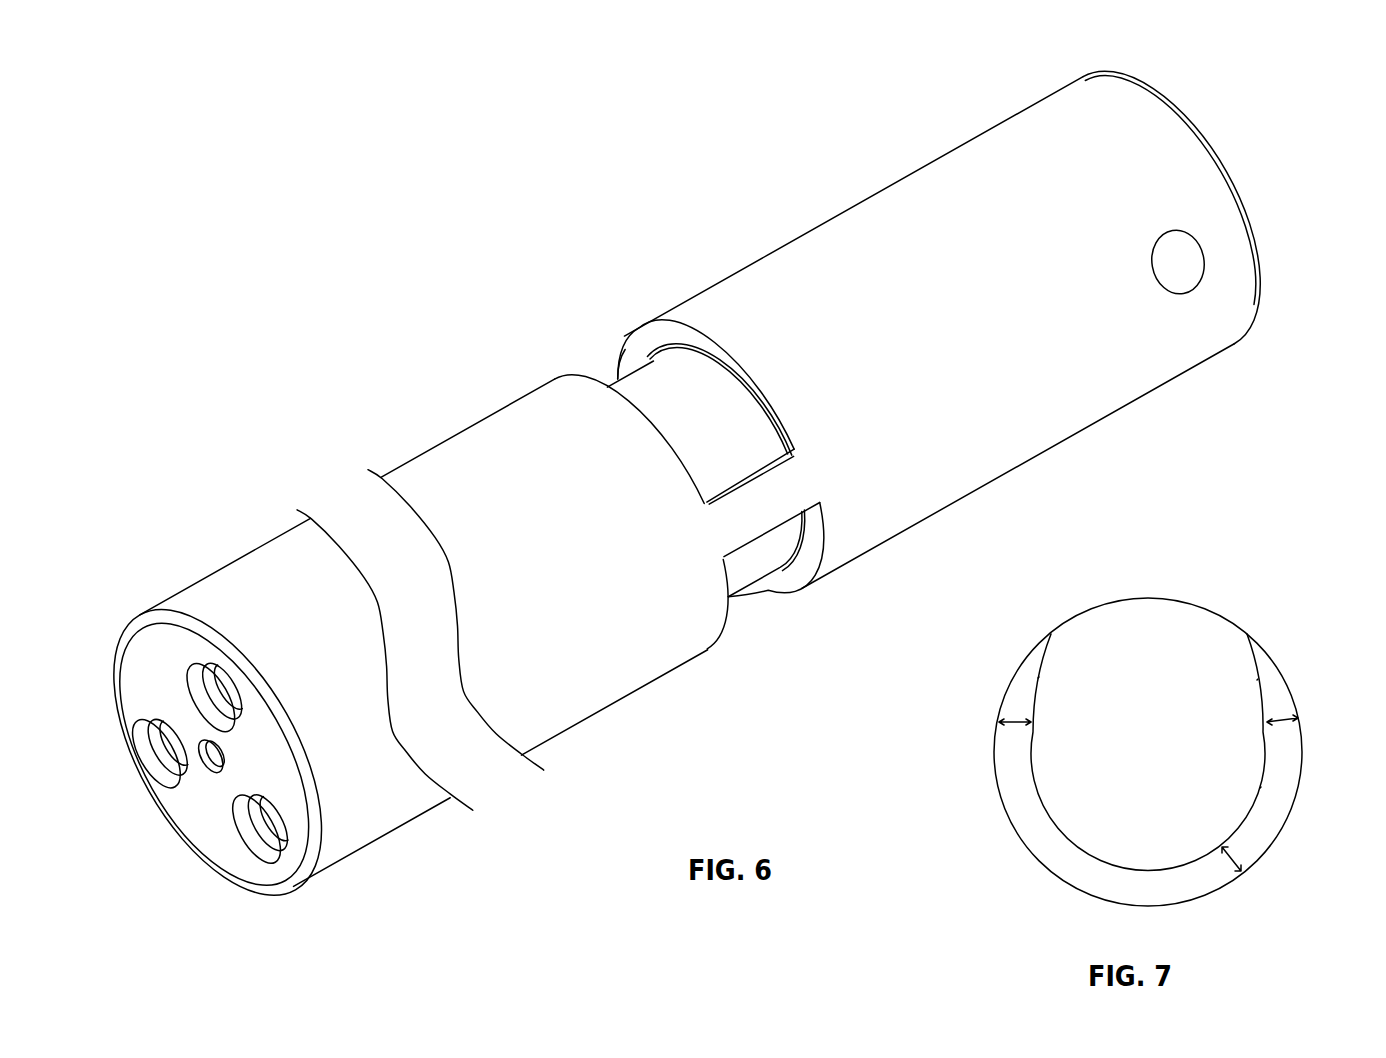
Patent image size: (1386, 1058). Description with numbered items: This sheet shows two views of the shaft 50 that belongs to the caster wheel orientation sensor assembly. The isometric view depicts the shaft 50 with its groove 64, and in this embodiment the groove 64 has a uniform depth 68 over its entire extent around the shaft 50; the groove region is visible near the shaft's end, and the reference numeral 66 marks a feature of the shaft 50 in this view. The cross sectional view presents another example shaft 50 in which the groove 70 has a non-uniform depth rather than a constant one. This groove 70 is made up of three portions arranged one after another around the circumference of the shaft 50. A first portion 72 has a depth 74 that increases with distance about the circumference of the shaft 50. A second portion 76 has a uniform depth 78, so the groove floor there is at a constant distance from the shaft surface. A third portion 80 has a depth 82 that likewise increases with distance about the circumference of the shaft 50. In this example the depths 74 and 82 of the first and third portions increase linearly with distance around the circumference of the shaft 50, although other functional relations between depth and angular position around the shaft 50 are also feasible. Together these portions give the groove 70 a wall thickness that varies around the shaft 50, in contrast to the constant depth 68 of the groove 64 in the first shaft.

In FIG. 6, the shaft 50 is at (606, 706).
In FIG. 7, the shaft 50 is at (1043, 864).
In FIG. 6, the groove 64 is at (625, 350).
In FIG. 6, the bore 66 is at (743, 520).
In FIG. 7, the bore 66 is at (1172, 598).
In FIG. 6, the uniform depth 68 is at (694, 346).
In FIG. 7, the groove 70 is at (1203, 886).
In FIG. 7, the first portion 72 is at (1257, 680).
In FIG. 7, the depth 74 is at (1282, 723).
In FIG. 7, the second portion 76 is at (1260, 788).
In FIG. 7, the uniform depth 78 is at (1244, 863).
In FIG. 7, the third portion 80 is at (1038, 678).
In FIG. 7, the depth 82 is at (1018, 730).